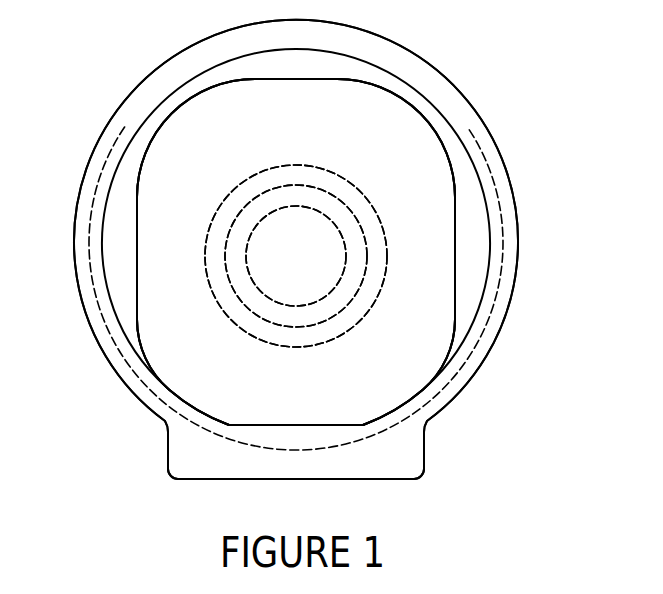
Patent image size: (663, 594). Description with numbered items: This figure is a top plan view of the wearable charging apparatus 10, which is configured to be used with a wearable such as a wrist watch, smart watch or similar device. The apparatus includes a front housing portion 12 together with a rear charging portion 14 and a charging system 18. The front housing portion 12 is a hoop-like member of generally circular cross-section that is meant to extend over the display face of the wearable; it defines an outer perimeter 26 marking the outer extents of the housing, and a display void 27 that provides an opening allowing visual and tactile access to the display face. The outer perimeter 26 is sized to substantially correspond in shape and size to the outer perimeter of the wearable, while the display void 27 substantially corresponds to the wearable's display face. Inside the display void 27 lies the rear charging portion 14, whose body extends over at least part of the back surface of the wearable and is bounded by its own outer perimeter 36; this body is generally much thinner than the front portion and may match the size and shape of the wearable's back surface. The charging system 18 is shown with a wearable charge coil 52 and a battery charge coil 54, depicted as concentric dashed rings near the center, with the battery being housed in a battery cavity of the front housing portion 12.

The wearable charging apparatus 10 is at (202, 483).
The front housing portion 12 is at (391, 42).
The rear charging portion 14 is at (456, 255).
The charging system 18 is at (503, 205).
The outer perimeter 26 is at (298, 52).
The display void 27 is at (165, 128).
The outer perimeter 36 is at (430, 128).
The wearable charge coil 52 is at (218, 318).
The battery charge coil 54 is at (296, 256).